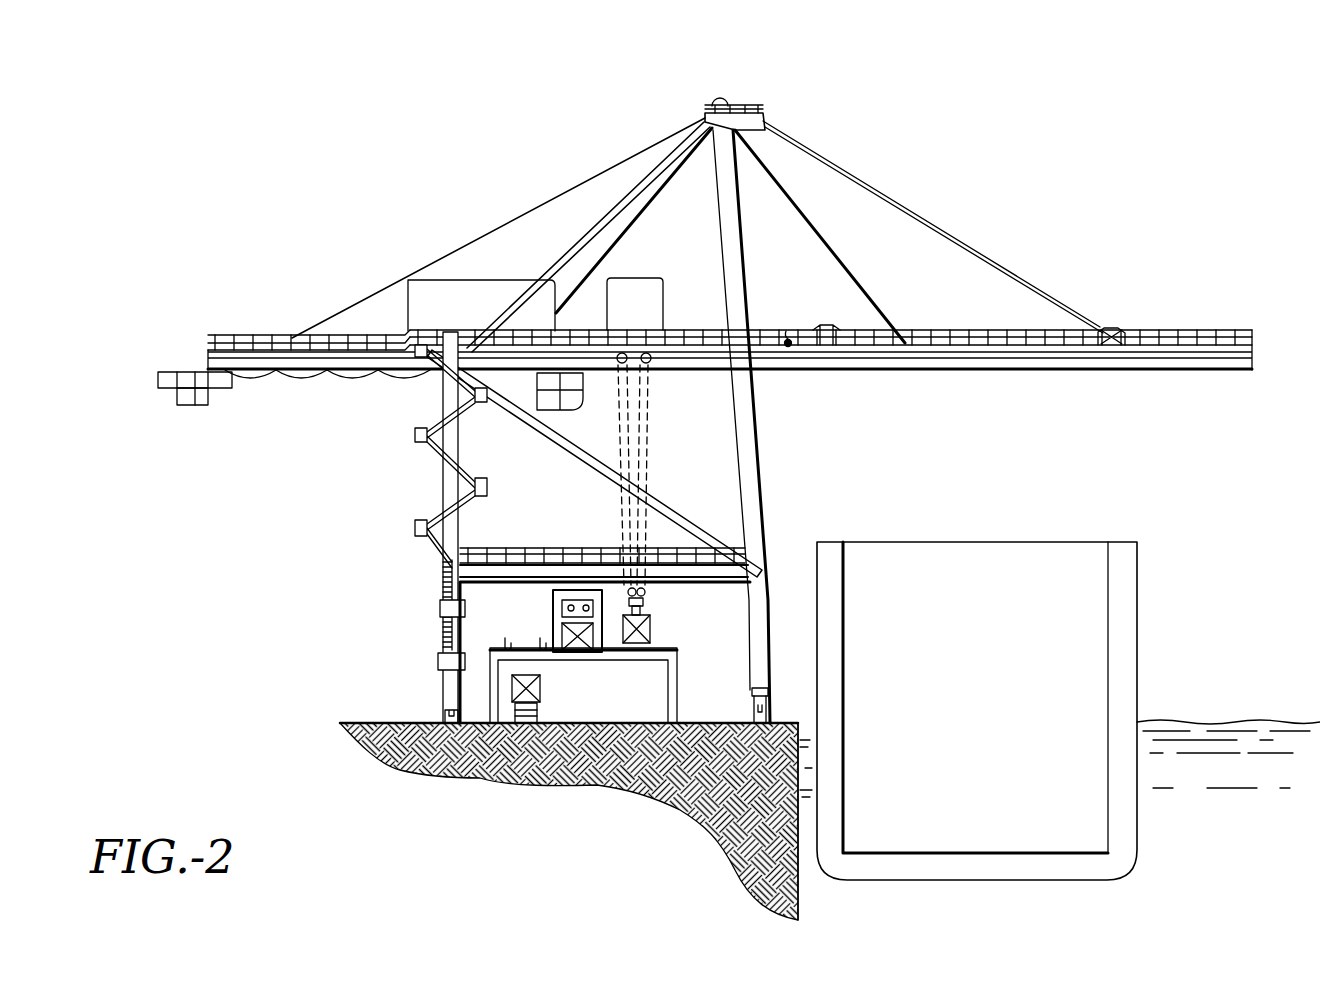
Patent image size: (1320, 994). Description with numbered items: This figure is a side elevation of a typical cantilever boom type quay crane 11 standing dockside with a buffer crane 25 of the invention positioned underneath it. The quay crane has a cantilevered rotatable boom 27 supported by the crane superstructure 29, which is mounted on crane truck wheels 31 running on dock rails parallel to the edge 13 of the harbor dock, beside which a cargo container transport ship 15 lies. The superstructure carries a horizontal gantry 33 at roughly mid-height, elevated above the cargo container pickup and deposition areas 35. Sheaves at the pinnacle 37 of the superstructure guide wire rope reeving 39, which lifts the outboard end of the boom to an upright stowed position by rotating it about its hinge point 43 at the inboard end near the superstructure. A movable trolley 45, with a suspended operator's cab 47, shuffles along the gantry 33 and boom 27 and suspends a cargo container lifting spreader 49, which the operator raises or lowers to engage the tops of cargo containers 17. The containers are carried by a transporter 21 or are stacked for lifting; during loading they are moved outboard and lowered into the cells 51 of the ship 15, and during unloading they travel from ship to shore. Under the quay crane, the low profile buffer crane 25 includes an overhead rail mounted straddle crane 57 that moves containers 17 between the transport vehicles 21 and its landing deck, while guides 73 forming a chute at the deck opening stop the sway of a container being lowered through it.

The quay crane 11 is at (907, 148).
The edge of the harbor dock 13 is at (800, 797).
The ship 15 is at (1123, 608).
The cargo containers 17 is at (650, 627).
The transporter 21 is at (540, 708).
The buffer crane 25 is at (568, 660).
The cantilevered rotatable boom 27 is at (1140, 356).
The crane superstructure 29 is at (752, 456).
The crane truck wheels 31 is at (448, 712).
The horizontal gantry 33 is at (707, 352).
The cargo container pickup and deposition areas 35 is at (720, 656).
The pinnacle of the superstructure 37 is at (745, 100).
The wire rope reeving 39 is at (947, 233).
The hinge point 43 is at (788, 338).
The movable trolley 45 is at (647, 378).
The operator's cab 47 is at (543, 418).
The cargo container lifting spreader 49 is at (643, 593).
The cells 51 is at (995, 655).
The overhead rail mounted straddle crane 57 is at (550, 598).
The guides 73 is at (543, 643).